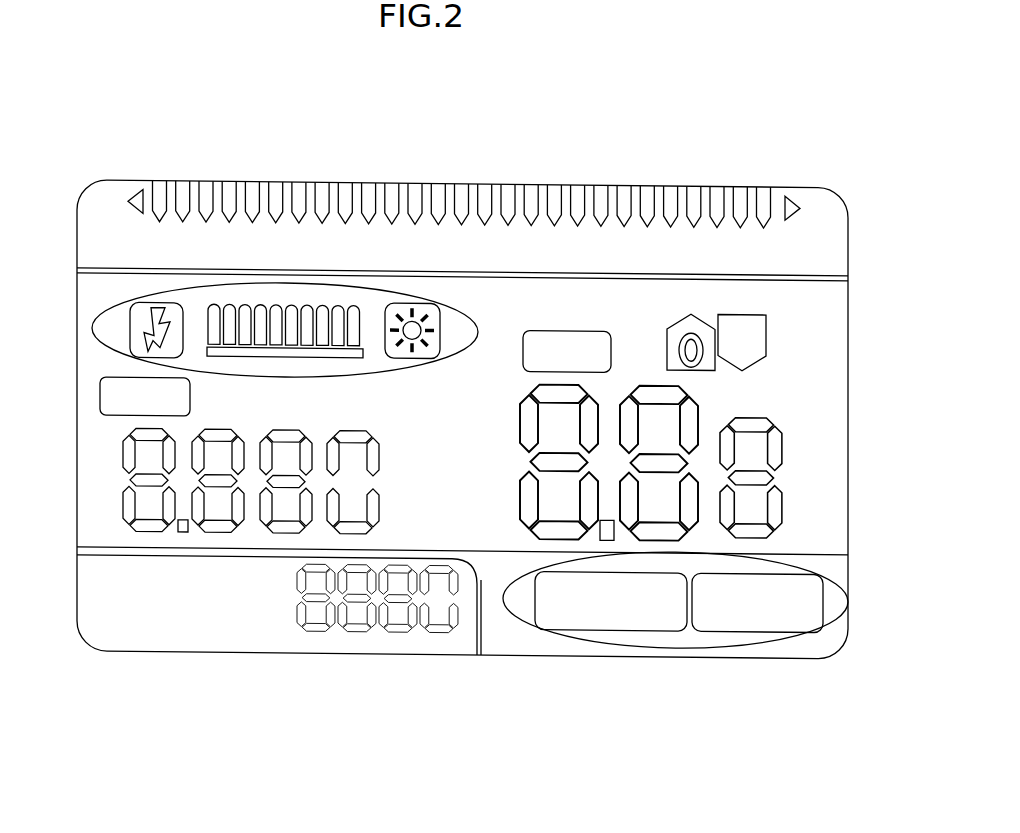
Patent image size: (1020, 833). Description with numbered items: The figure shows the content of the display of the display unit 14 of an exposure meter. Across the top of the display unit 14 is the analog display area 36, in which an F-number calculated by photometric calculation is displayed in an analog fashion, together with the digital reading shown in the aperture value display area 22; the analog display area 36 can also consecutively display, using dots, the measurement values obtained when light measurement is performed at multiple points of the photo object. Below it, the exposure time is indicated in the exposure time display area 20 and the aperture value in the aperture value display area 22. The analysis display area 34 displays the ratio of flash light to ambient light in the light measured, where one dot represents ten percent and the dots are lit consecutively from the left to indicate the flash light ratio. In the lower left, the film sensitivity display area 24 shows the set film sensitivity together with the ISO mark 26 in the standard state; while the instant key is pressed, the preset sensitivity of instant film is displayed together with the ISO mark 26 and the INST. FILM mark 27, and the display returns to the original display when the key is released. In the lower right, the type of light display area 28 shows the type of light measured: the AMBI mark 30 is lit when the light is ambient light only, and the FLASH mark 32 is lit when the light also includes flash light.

The display unit 14 is at (157, 156).
The analog display area 36 is at (828, 226).
The analysis display area 34 is at (122, 303).
The exposure time display area 20 is at (92, 472).
The aperture value display area 22 is at (797, 484).
The INST. FILM mark 27 is at (85, 588).
The film sensitivity display area 24 is at (152, 623).
The ISO mark 26 is at (250, 637).
The type of light display area 28 is at (694, 650).
The FLASH mark 32 is at (617, 630).
The AMBI mark 30 is at (757, 632).